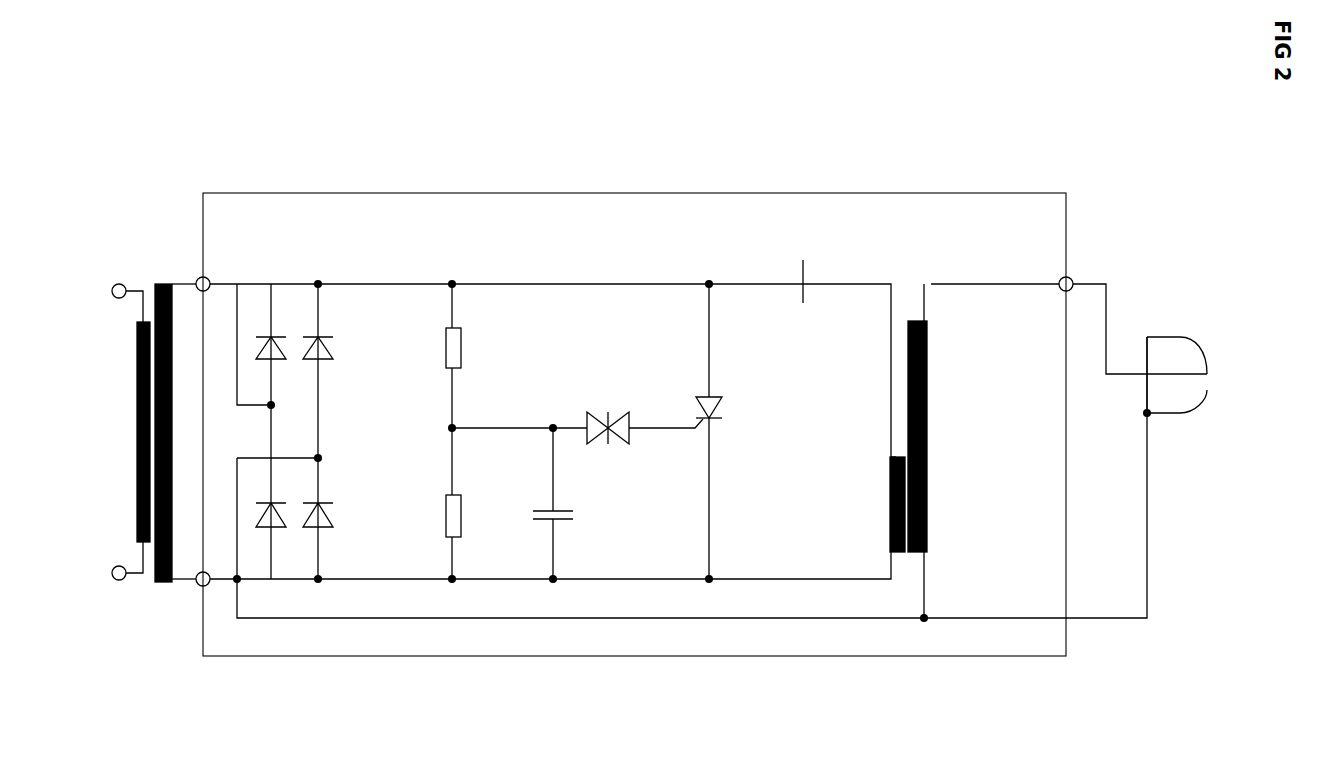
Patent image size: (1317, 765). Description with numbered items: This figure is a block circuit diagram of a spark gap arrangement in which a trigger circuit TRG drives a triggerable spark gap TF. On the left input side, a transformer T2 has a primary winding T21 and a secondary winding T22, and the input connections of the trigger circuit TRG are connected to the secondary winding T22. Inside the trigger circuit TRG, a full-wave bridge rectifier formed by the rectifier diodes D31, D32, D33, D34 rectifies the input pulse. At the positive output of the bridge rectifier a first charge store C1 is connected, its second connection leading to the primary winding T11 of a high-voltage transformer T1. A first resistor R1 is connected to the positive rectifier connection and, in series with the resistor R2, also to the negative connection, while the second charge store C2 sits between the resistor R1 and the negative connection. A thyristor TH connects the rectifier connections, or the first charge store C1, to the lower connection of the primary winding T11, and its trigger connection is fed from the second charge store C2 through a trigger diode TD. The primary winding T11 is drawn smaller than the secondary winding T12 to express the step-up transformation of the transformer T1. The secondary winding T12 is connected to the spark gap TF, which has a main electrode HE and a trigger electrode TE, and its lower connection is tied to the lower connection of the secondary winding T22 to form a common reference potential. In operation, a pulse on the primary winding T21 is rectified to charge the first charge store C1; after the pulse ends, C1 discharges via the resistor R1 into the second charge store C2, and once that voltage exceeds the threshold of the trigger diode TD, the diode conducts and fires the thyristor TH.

The trigger circuit TRG is at (635, 657).
The transformer T2 is at (150, 592).
The primary winding T21 is at (143, 322).
The secondary winding T22 is at (163, 283).
The rectifier diode D31 is at (271, 337).
The rectifier diode D32 is at (332, 358).
The rectifier diode D33 is at (272, 502).
The rectifier diode D34 is at (332, 527).
The first resistor R1 is at (461, 346).
The resistor R2 is at (446, 515).
The second charge store C2 is at (533, 511).
The trigger diode TD is at (628, 444).
The thyristor TH is at (716, 420).
The first charge store C1 is at (795, 260).
The high-voltage transformer T1 is at (898, 593).
The primary winding T11 is at (890, 506).
The secondary winding T12 is at (927, 435).
The triggerable spark gap TF is at (1185, 306).
The trigger electrode TE is at (1207, 368).
The main electrode HE is at (1180, 415).